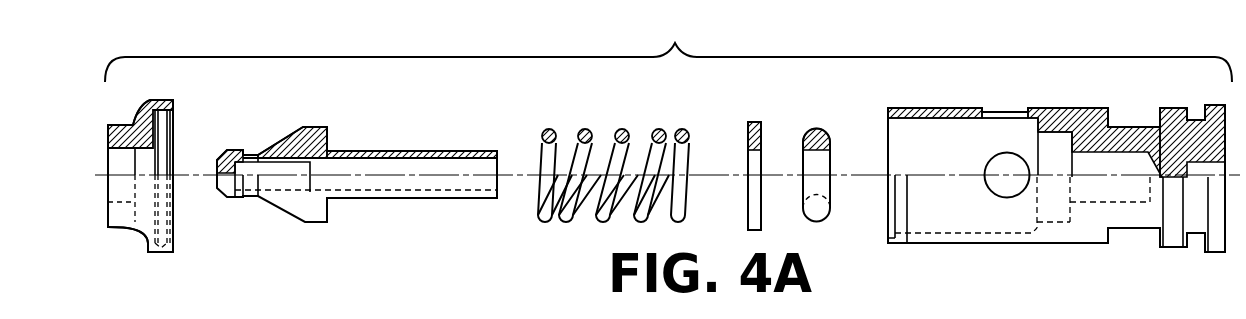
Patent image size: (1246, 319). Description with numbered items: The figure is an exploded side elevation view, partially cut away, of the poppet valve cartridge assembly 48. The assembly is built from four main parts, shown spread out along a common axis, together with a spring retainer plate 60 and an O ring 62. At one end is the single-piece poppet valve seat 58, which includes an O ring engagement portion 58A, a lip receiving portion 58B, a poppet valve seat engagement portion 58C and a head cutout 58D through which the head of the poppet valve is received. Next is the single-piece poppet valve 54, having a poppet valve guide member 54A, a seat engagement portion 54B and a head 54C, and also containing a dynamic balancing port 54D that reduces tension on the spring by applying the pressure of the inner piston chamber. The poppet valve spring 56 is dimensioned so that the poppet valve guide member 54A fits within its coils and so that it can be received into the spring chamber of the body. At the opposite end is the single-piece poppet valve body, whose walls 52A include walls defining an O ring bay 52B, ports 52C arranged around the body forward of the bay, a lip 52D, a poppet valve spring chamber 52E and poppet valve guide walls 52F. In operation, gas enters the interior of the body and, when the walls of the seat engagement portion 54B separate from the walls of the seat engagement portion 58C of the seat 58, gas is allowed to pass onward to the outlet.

The poppet valve cartridge assembly 48 is at (668, 50).
The walls 52A is at (1075, 110).
The O ring bay 52B is at (1145, 122).
The ports 52C is at (997, 110).
The lip 52D is at (902, 110).
The poppet valve spring chamber 52E is at (957, 120).
The poppet valve guide walls 52F is at (1048, 142).
The poppet valve 54 is at (318, 127).
The poppet valve guide member 54A is at (423, 150).
The seat engagement portion 54B is at (287, 138).
The head 54C is at (218, 156).
The dynamic balancing port 54D is at (253, 198).
The poppet valve spring 56 is at (583, 128).
The poppet valve seat 58 is at (162, 253).
The O ring engagement portion 58A is at (140, 238).
The lip receiving portion 58B is at (170, 217).
The poppet valve seat engagement portion 58C is at (137, 167).
The head cutout 58D is at (108, 160).
The spring retainer plate 60 is at (753, 122).
The O ring 62 is at (813, 130).